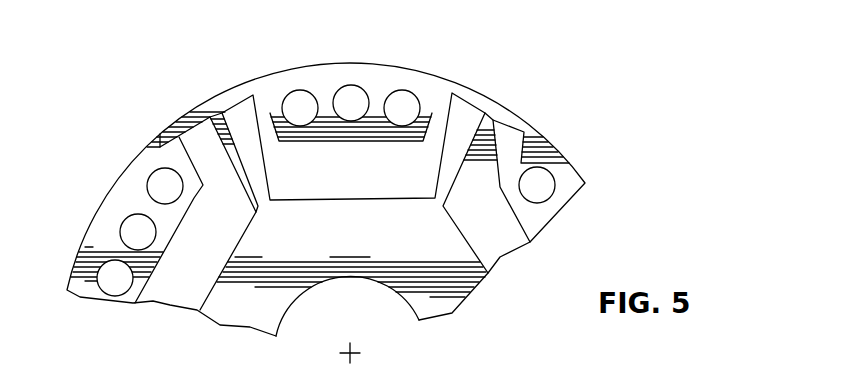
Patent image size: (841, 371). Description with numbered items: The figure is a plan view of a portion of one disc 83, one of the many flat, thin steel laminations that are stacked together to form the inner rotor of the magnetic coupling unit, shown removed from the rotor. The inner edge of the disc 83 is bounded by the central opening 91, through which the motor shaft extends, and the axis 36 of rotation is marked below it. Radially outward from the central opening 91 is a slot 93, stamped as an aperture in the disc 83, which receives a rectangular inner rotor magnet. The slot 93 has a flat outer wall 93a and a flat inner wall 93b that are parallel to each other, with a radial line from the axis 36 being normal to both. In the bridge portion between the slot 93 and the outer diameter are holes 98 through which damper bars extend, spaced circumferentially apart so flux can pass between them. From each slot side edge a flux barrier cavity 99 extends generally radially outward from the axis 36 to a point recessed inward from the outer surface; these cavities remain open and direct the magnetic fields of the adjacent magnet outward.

The disc 83 is at (200, 86).
The flux barrier cavity 99 is at (233, 127).
The holes 98 is at (162, 183).
The slot 93 is at (163, 238).
The outer wall 93a is at (190, 210).
The inner wall 93b is at (230, 252).
The central opening 91 is at (290, 312).
The axis 36 is at (352, 352).